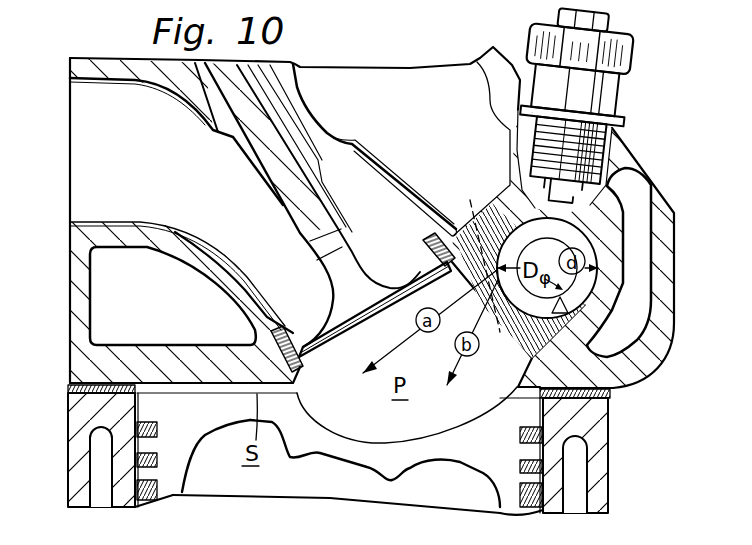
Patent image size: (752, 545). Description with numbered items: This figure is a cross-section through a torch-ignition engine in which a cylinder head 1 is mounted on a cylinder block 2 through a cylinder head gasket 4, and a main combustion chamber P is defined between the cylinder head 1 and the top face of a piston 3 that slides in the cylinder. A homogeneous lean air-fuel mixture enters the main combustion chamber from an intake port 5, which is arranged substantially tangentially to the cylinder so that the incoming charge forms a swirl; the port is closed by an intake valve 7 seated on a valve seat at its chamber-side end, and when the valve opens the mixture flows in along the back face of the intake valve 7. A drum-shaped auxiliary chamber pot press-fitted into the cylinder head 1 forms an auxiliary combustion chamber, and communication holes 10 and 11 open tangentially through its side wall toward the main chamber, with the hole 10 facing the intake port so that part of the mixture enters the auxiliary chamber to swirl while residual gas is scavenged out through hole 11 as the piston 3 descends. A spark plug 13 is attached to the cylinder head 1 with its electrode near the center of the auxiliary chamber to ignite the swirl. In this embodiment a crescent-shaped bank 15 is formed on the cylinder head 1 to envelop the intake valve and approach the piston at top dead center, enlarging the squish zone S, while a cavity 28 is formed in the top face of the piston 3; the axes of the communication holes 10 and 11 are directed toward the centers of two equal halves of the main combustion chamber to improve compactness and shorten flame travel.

The cylinder head 1 is at (647, 355).
The cylinder block 2 is at (604, 425).
The piston 3 is at (500, 460).
The cylinder head gasket 4 is at (608, 391).
The intake port 5 is at (80, 163).
The intake valve 7 is at (317, 348).
The communication hole 10 is at (477, 254).
The communication hole 11 is at (520, 283).
The spark plug 13 is at (598, 158).
The bank 15 is at (208, 394).
The cavity 28 is at (360, 430).